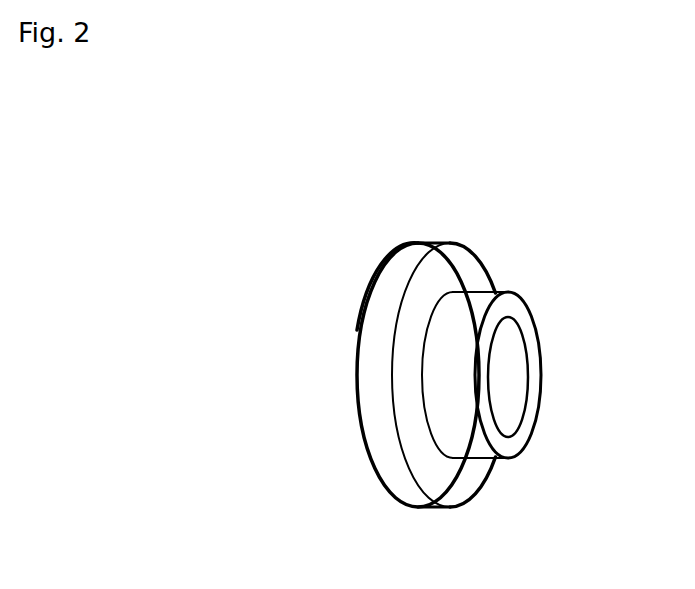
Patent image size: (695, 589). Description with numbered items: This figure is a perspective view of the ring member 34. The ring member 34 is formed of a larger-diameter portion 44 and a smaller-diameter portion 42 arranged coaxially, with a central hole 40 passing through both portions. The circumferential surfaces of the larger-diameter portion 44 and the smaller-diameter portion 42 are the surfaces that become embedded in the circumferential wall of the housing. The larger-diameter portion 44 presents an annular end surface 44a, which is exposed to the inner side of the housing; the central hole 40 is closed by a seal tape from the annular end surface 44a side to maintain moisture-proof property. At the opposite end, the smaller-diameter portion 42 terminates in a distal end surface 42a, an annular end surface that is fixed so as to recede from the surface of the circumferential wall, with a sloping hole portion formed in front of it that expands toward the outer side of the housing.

The ring member 34 is at (458, 222).
The central hole 40 is at (505, 373).
The smaller-diameter portion 42 is at (467, 433).
The distal end surface of the smaller-diameter portion 42a is at (523, 318).
The larger-diameter portion 44 is at (378, 443).
The annular end surface of the larger-diameter portion 44a is at (367, 295).